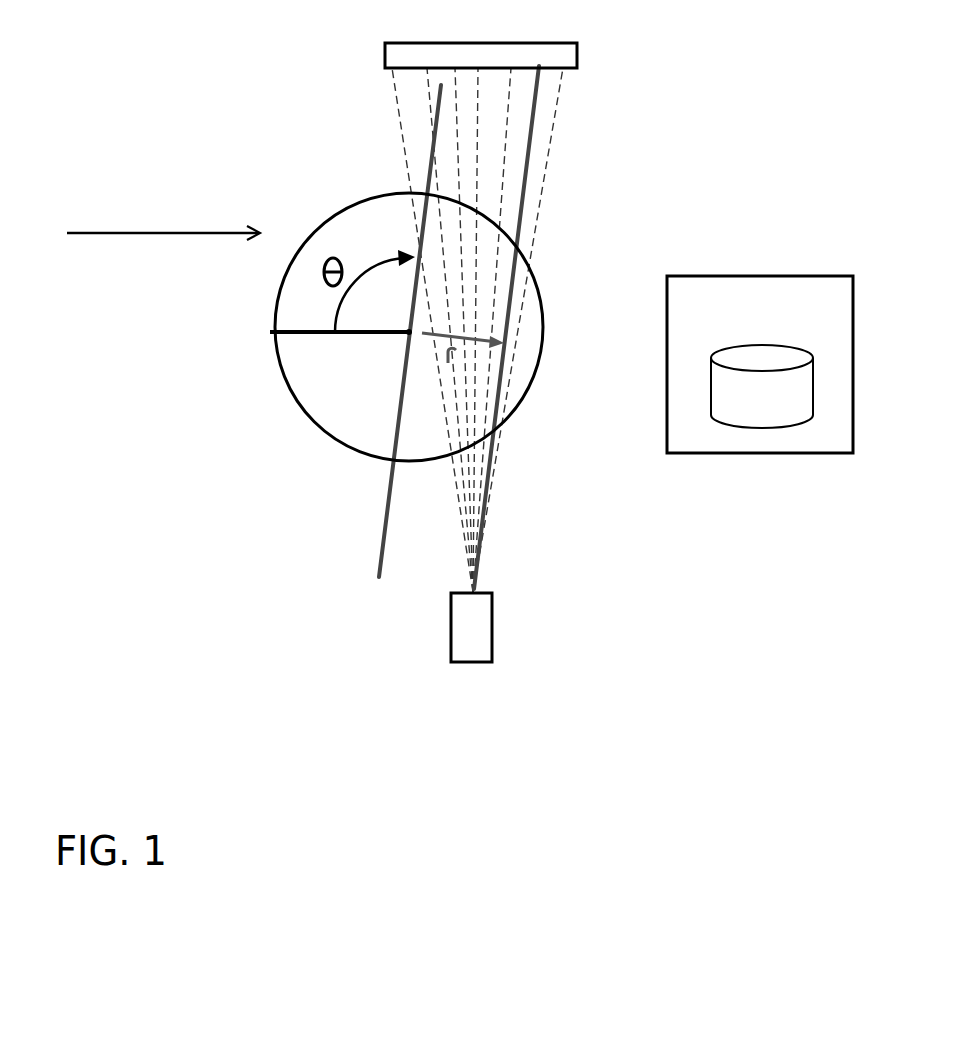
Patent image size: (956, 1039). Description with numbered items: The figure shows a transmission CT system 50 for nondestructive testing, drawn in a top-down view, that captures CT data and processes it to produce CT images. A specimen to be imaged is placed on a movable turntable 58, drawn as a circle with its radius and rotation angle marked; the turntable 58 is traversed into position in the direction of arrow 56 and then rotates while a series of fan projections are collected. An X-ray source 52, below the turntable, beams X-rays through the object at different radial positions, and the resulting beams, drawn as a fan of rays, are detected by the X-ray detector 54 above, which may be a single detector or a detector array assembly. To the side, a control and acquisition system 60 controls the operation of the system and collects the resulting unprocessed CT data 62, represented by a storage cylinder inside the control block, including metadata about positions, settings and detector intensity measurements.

The CT system 50 is at (158, 52).
The X-ray source 52 is at (478, 637).
The X-ray detector 54 is at (566, 61).
The arrow 56 is at (156, 234).
The movable turntable 58 is at (360, 423).
The control and acquisition system 60 is at (705, 336).
The unprocessed CT data 62 is at (746, 402).